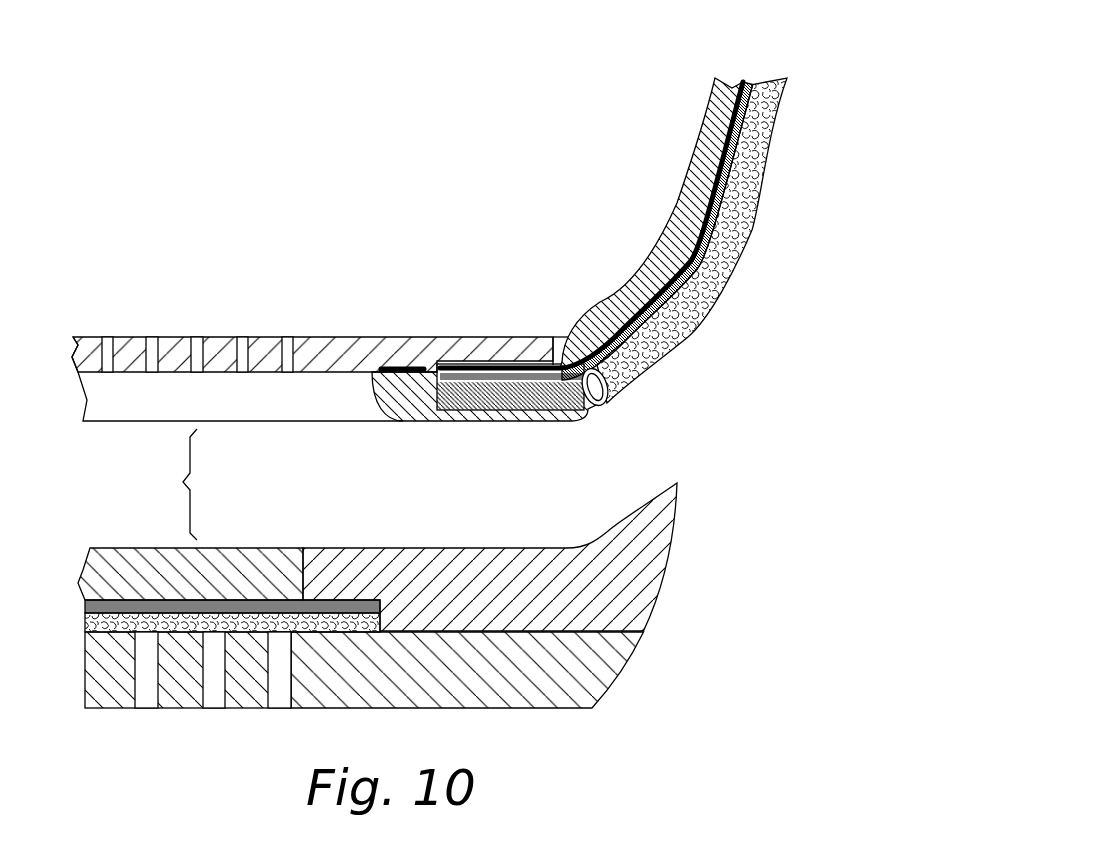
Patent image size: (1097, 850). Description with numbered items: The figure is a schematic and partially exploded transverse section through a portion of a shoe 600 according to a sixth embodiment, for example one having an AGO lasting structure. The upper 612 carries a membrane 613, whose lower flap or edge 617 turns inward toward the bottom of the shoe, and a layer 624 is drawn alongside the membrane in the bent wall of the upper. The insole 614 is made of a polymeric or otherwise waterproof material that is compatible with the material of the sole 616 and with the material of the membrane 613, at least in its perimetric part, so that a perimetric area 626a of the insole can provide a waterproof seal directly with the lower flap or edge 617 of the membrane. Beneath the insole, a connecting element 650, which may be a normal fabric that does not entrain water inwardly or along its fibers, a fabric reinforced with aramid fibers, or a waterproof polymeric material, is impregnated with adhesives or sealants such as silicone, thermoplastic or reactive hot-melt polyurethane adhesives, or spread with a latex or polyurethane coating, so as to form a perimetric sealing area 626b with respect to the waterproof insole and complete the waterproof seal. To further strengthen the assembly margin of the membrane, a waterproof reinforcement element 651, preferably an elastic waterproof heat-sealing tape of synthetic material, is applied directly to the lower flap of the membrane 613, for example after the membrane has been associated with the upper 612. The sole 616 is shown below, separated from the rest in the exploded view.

The catheter/device assembly 600 is at (447, 272).
The upper 612 is at (772, 104).
The membrane 613 is at (725, 157).
The insole 614 is at (317, 337).
The sole 616 is at (680, 597).
The lower flap or edge of the membrane 617 is at (490, 378).
The hatched wall layer 624 is at (640, 273).
The perimetric area 626a is at (467, 363).
The perimetric sealing area 626b is at (410, 372).
The connecting element 650 is at (523, 397).
The waterproof reinforcement element 651 is at (567, 337).